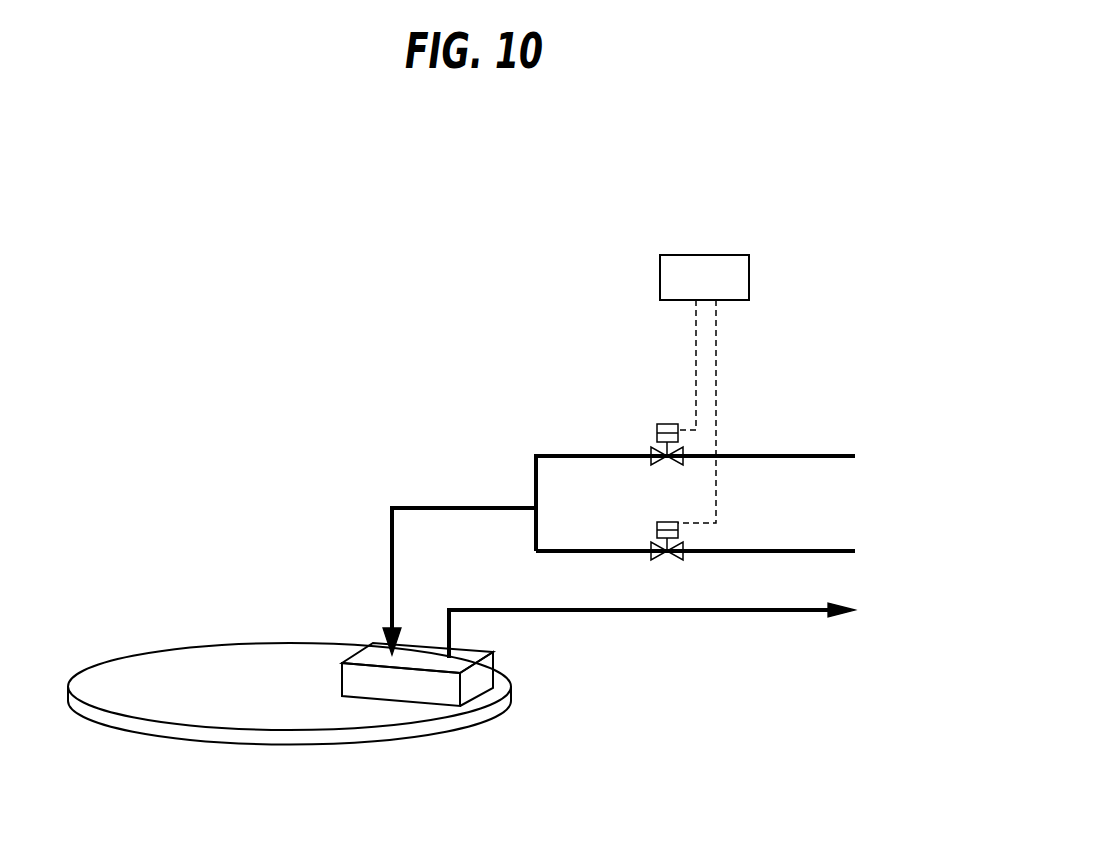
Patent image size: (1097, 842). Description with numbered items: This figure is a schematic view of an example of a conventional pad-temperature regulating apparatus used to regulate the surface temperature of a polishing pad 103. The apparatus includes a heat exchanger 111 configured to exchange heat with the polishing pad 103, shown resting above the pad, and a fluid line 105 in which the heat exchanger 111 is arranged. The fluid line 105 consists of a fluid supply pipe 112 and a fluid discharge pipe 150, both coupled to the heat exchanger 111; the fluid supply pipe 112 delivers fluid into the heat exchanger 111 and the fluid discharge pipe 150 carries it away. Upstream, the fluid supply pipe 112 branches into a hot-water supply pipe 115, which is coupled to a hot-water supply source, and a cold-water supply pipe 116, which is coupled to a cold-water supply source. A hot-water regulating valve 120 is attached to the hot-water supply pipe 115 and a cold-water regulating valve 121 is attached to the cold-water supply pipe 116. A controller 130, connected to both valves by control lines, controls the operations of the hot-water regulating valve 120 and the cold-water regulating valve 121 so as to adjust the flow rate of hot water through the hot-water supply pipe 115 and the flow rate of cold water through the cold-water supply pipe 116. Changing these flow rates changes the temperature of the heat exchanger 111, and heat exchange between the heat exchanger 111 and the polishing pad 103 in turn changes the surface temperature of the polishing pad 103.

The polishing pad 103 is at (225, 665).
The fluid line 105 is at (366, 463).
The heat exchanger 111 is at (421, 658).
The fluid supply pipe 112 is at (460, 505).
The hot-water supply pipe 115 is at (763, 453).
The cold-water supply pipe 116 is at (777, 548).
The hot-water regulating valve 120 is at (667, 424).
The cold-water regulating valve 121 is at (667, 522).
The controller 130 is at (695, 255).
The fluid discharge pipe 150 is at (640, 612).